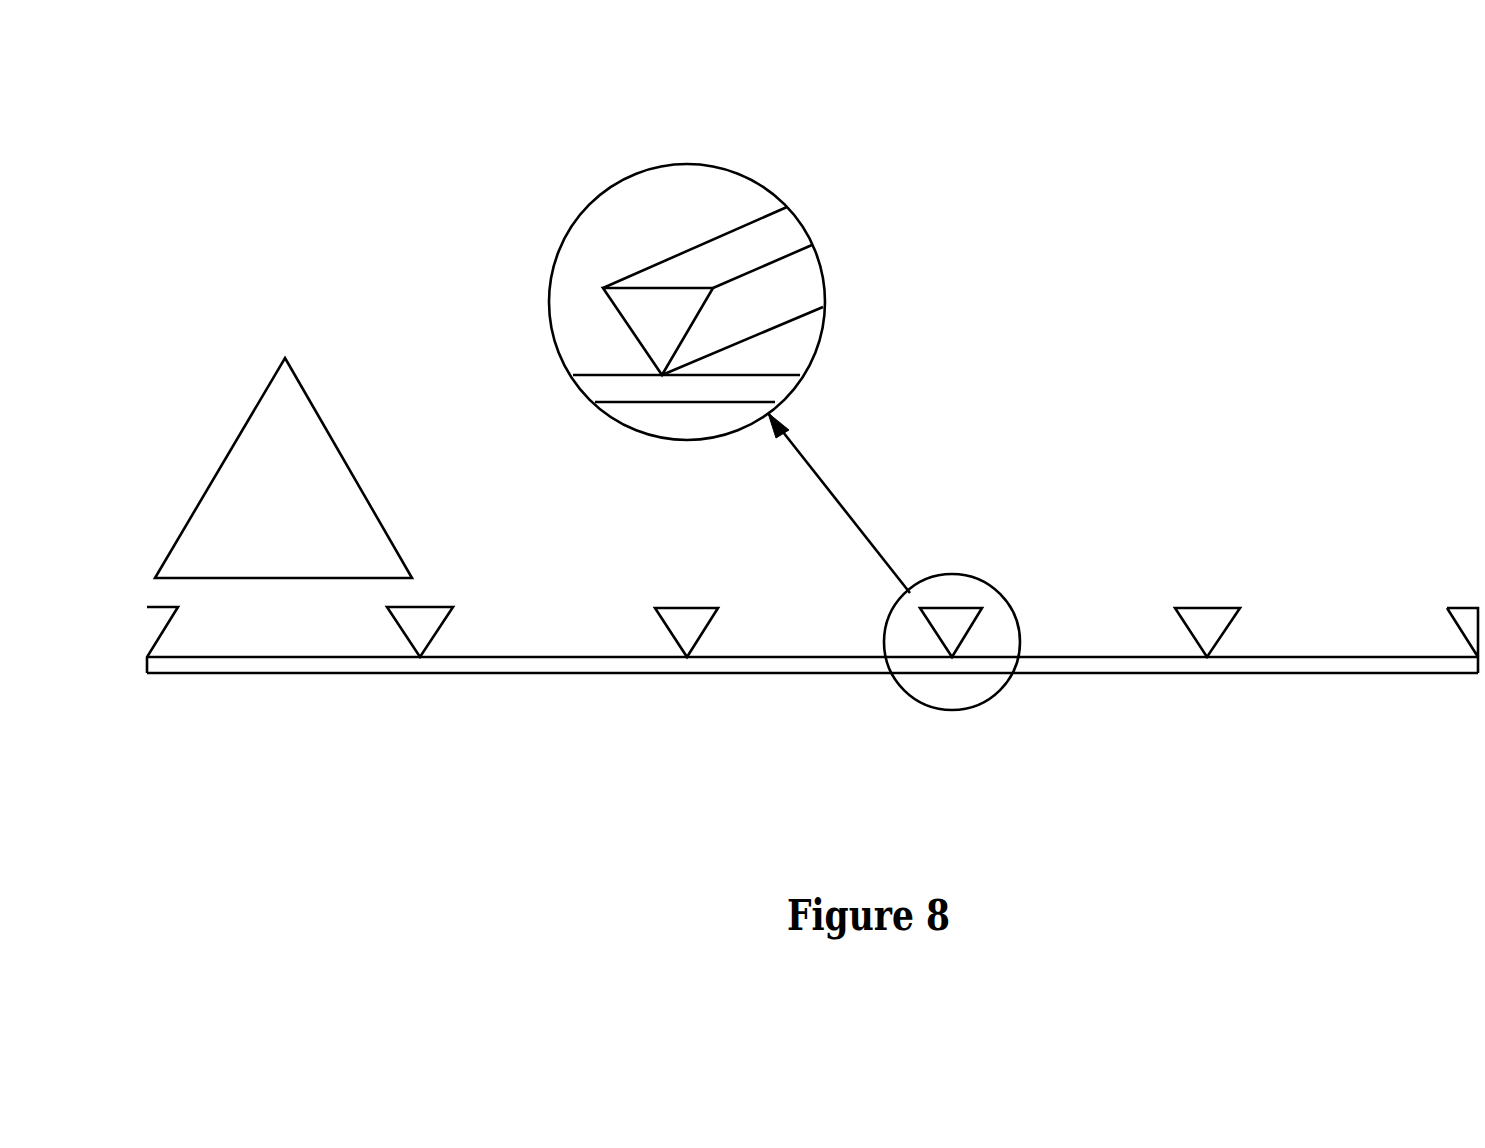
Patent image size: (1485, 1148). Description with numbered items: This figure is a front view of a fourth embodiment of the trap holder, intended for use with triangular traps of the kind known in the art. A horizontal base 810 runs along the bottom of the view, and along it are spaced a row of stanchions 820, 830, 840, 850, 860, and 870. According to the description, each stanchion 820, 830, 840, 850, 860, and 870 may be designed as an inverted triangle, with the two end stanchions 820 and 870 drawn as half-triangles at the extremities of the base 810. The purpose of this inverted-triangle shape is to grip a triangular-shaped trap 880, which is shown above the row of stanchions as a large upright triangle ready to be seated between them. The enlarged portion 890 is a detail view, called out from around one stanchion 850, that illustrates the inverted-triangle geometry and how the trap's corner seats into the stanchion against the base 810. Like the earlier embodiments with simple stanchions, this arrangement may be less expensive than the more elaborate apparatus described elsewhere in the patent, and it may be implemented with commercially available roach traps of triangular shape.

The substrate 810 is at (1102, 657).
The stanchion 820 is at (147, 655).
The stanchion 830 is at (430, 645).
The stanchion 840 is at (695, 645).
The stanchion 850 is at (960, 645).
The stanchion 860 is at (1217, 643).
The stanchion 870 is at (1453, 623).
The triangular-shaped trap 880 is at (347, 462).
The enlarged portion 890 is at (727, 167).